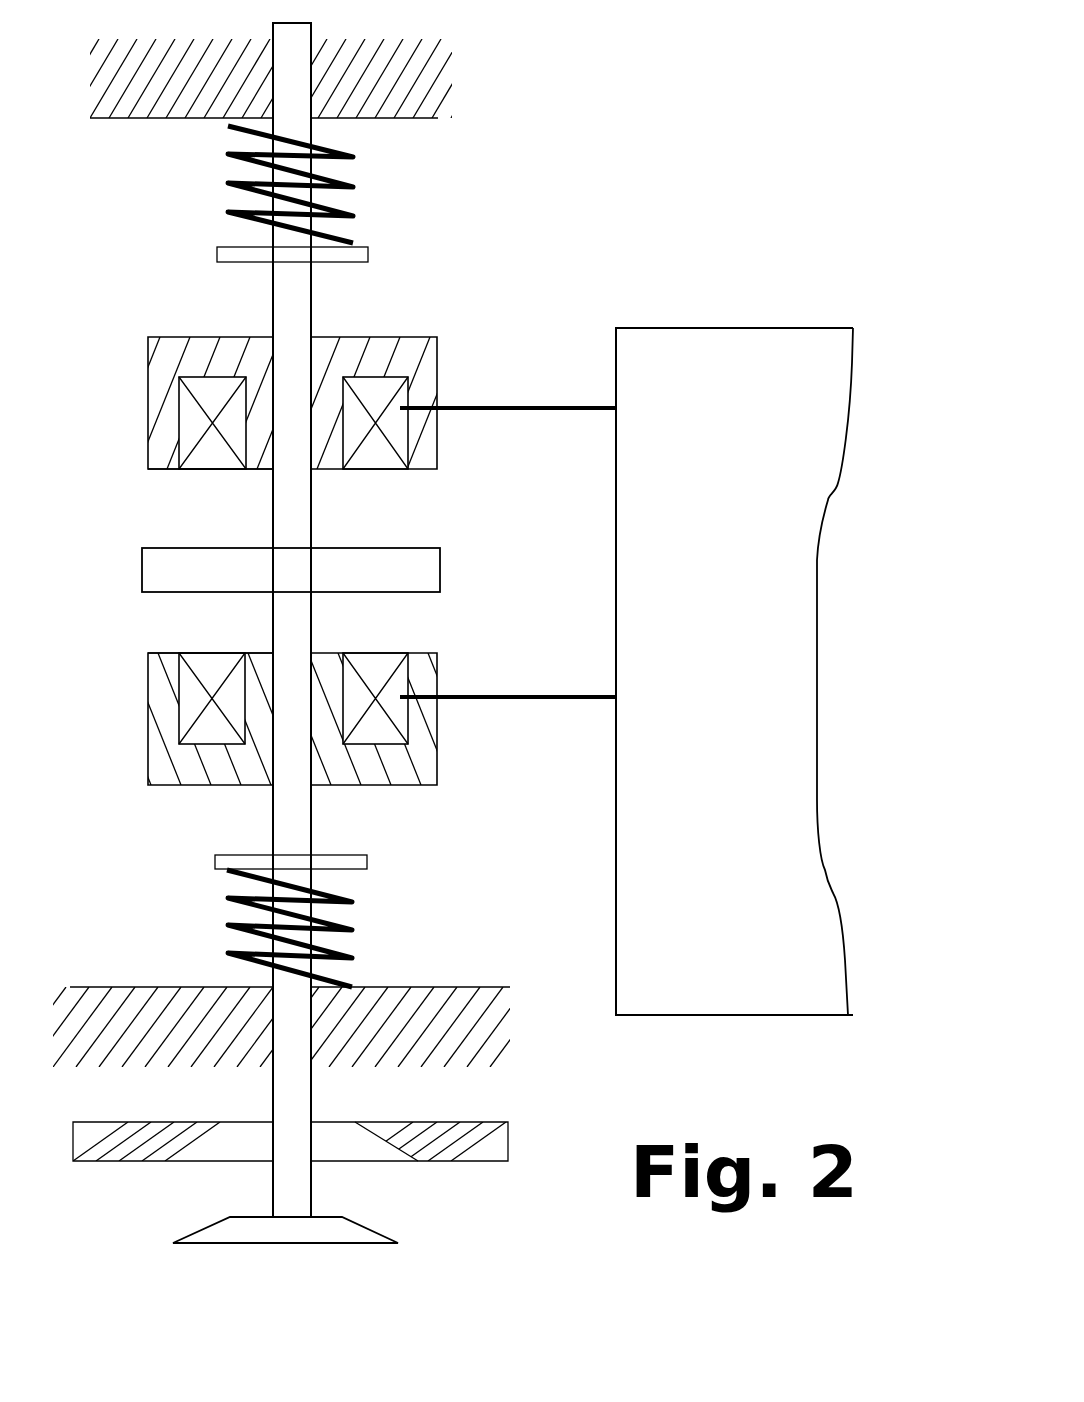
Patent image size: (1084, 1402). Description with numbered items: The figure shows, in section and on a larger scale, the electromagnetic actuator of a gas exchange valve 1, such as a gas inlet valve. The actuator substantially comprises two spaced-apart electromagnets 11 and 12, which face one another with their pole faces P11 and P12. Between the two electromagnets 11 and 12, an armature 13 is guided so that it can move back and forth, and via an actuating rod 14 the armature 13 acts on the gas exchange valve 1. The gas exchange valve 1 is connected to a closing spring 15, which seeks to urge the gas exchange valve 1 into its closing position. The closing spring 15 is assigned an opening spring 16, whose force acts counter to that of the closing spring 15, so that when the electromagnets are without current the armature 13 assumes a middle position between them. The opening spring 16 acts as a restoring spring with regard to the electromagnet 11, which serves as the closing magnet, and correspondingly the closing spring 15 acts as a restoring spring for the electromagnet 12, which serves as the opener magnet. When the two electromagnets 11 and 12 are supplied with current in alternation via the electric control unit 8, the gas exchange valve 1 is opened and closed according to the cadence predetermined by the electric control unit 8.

The gas exchange valve 1 is at (287, 1245).
The electric control unit 8 is at (731, 657).
The electromagnet 11 is at (159, 360).
The electromagnet 12 is at (156, 703).
The armature 13 is at (142, 570).
The actuating rod 14 is at (302, 313).
The closing spring 15 is at (357, 928).
The opening spring 16 is at (357, 216).
The pole face P11 is at (170, 476).
The pole face P12 is at (177, 633).